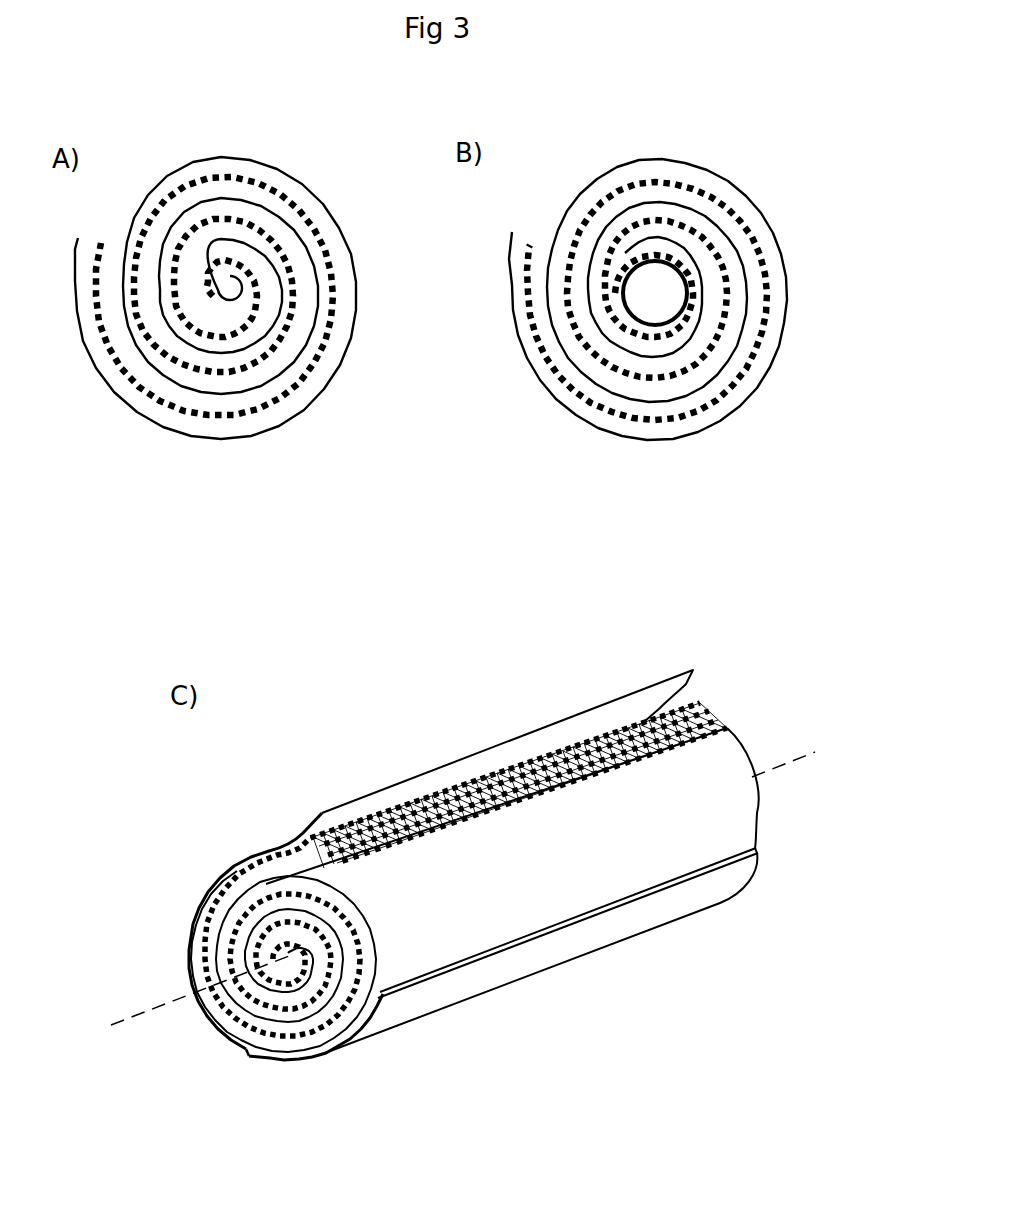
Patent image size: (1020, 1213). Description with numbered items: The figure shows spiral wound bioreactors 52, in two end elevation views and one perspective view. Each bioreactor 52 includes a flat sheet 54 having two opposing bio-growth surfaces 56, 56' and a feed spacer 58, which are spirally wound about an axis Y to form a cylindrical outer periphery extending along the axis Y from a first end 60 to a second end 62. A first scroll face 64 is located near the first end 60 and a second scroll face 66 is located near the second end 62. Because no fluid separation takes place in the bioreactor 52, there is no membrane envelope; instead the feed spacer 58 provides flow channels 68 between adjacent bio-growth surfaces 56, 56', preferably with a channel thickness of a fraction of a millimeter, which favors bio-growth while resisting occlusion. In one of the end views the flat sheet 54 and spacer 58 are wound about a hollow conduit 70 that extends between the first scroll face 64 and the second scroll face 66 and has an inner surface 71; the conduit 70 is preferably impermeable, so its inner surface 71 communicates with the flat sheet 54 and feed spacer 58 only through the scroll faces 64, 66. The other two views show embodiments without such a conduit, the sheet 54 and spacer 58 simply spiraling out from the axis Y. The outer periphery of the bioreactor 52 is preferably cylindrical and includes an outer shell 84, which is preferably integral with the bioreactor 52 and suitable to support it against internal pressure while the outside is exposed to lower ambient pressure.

In FIG. 3A, the bioreactor 52 is at (318, 152).
In FIG. 3B, the bioreactor 52 is at (792, 246).
In FIG. 3C, the bioreactor 52 is at (650, 663).
In FIG. 3A, the flat sheet 54 is at (240, 299).
In FIG. 3B, the flat sheet 54 is at (673, 298).
In FIG. 3C, the flat sheet 54 is at (552, 723).
In FIG. 3A, the bio-growth surface 56 is at (240, 298).
In FIG. 3B, the bio-growth surface 56 is at (661, 298).
In FIG. 3A, the bio-growth surface 56' is at (226, 288).
In FIG. 3B, the bio-growth surface 56' is at (647, 273).
In FIG. 3A, the feed spacer 58 is at (267, 288).
In FIG. 3B, the feed spacer 58 is at (698, 273).
In FIG. 3C, the feed spacer 58 is at (722, 715).
In FIG. 3A, the flow channels 68 is at (267, 288).
In FIG. 3B, the flow channels 68 is at (698, 273).
In FIG. 3B, the hollow conduit 70 is at (603, 282).
In FIG. 3B, the inner surface 71 is at (683, 297).
In FIG. 3C, the first end 60 is at (212, 1022).
In FIG. 3C, the second end 62 is at (758, 830).
In FIG. 3C, the first scroll face 64 is at (253, 944).
In FIG. 3C, the second scroll face 66 is at (757, 803).
In FIG. 3C, the outer shell 84 is at (596, 946).
In FIG. 3A, the axis Y is at (222, 288).
In FIG. 3C, the axis Y is at (463, 888).